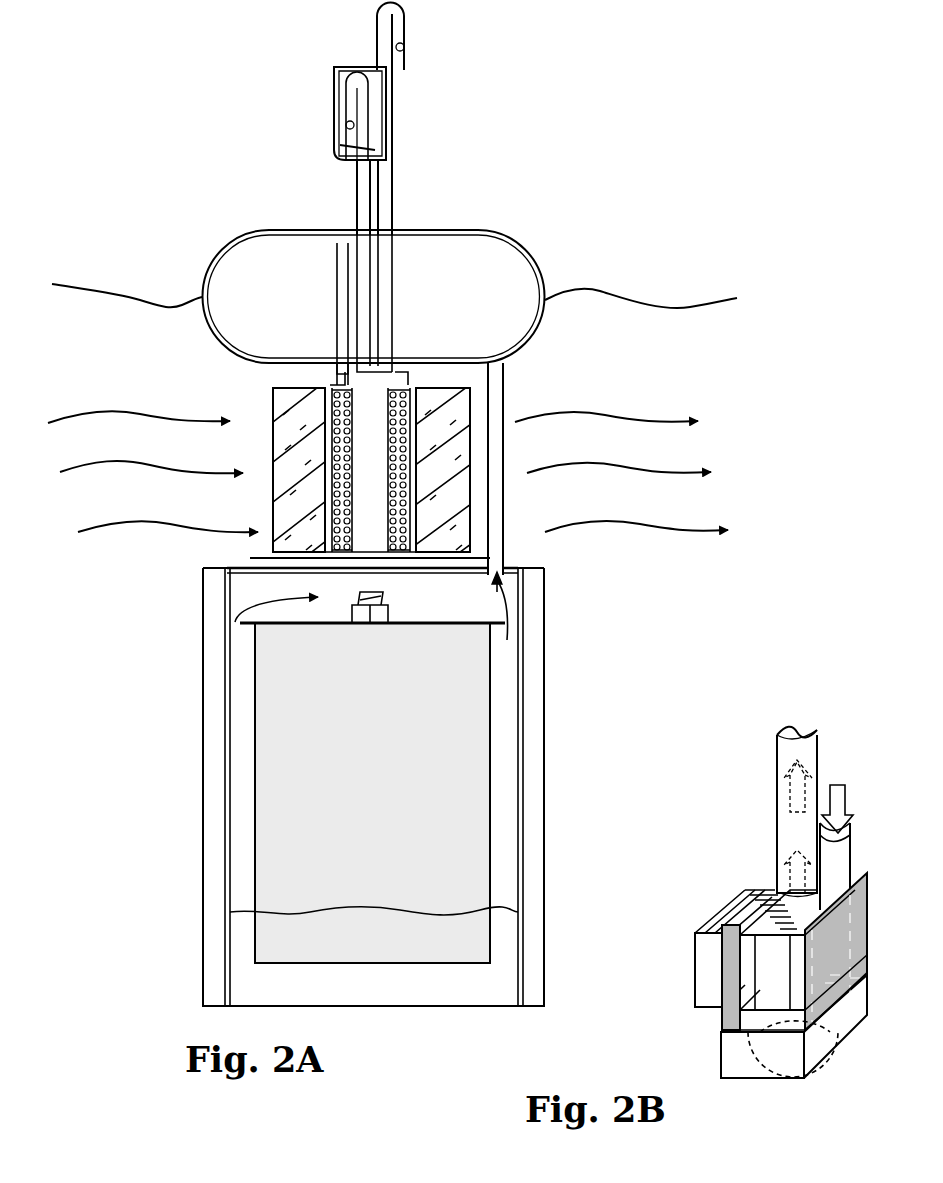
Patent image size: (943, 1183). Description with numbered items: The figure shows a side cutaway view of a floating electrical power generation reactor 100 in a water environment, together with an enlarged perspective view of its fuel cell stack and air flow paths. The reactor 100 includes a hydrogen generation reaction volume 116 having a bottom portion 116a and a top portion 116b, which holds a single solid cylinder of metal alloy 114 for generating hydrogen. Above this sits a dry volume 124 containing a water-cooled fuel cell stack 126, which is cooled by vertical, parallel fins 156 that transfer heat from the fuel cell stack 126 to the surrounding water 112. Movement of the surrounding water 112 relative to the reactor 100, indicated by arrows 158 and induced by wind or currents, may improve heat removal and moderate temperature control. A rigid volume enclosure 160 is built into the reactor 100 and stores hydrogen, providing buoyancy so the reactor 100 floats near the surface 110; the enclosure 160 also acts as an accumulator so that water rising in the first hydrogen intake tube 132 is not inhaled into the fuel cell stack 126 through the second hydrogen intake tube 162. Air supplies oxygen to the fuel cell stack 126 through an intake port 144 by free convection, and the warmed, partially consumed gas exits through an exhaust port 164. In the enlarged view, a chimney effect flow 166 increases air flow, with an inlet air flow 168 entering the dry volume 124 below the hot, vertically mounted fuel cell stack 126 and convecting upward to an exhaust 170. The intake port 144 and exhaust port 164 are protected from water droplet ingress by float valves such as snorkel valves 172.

In FIG. 2A, the reactor 100 is at (580, 770).
In FIG. 2A, the surface 110 is at (130, 298).
In FIG. 2A, the surrounding water 112 is at (225, 503).
In FIG. 2A, the metal alloy 114 is at (310, 737).
In FIG. 2A, the hydrogen generation reaction volume 116 is at (242, 848).
In FIG. 2A, the bottom portion 116a is at (240, 930).
In FIG. 2A, the top portion 116b is at (240, 683).
In FIG. 2A, the dry volume 124 is at (255, 556).
In FIG. 2B, the dry volume 124 is at (722, 1010).
In FIG. 2A, the fuel cell stack 126 is at (367, 432).
In FIG. 2B, the fuel cell stack 126 is at (770, 885).
In FIG. 2A, the first hydrogen intake tube 132 is at (497, 530).
In FIG. 2A, the intake port 144 is at (352, 108).
In FIG. 2A, the fins 156 is at (458, 435).
In FIG. 2B, the fins 156 is at (708, 973).
In FIG. 2A, the arrows 158 is at (192, 471).
In FIG. 2A, the rigid volume enclosure 160 is at (475, 262).
In FIG. 2A, the second hydrogen intake tube 162 is at (340, 283).
In FIG. 2A, the exhaust port 164 is at (400, 35).
In FIG. 2B, the chimney effect flow 166 is at (820, 1040).
In FIG. 2B, the inlet air flow 168 is at (855, 845).
In FIG. 2B, the exhaust 170 is at (793, 843).
In FIG. 2A, the snorkel valves 172 is at (380, 47).